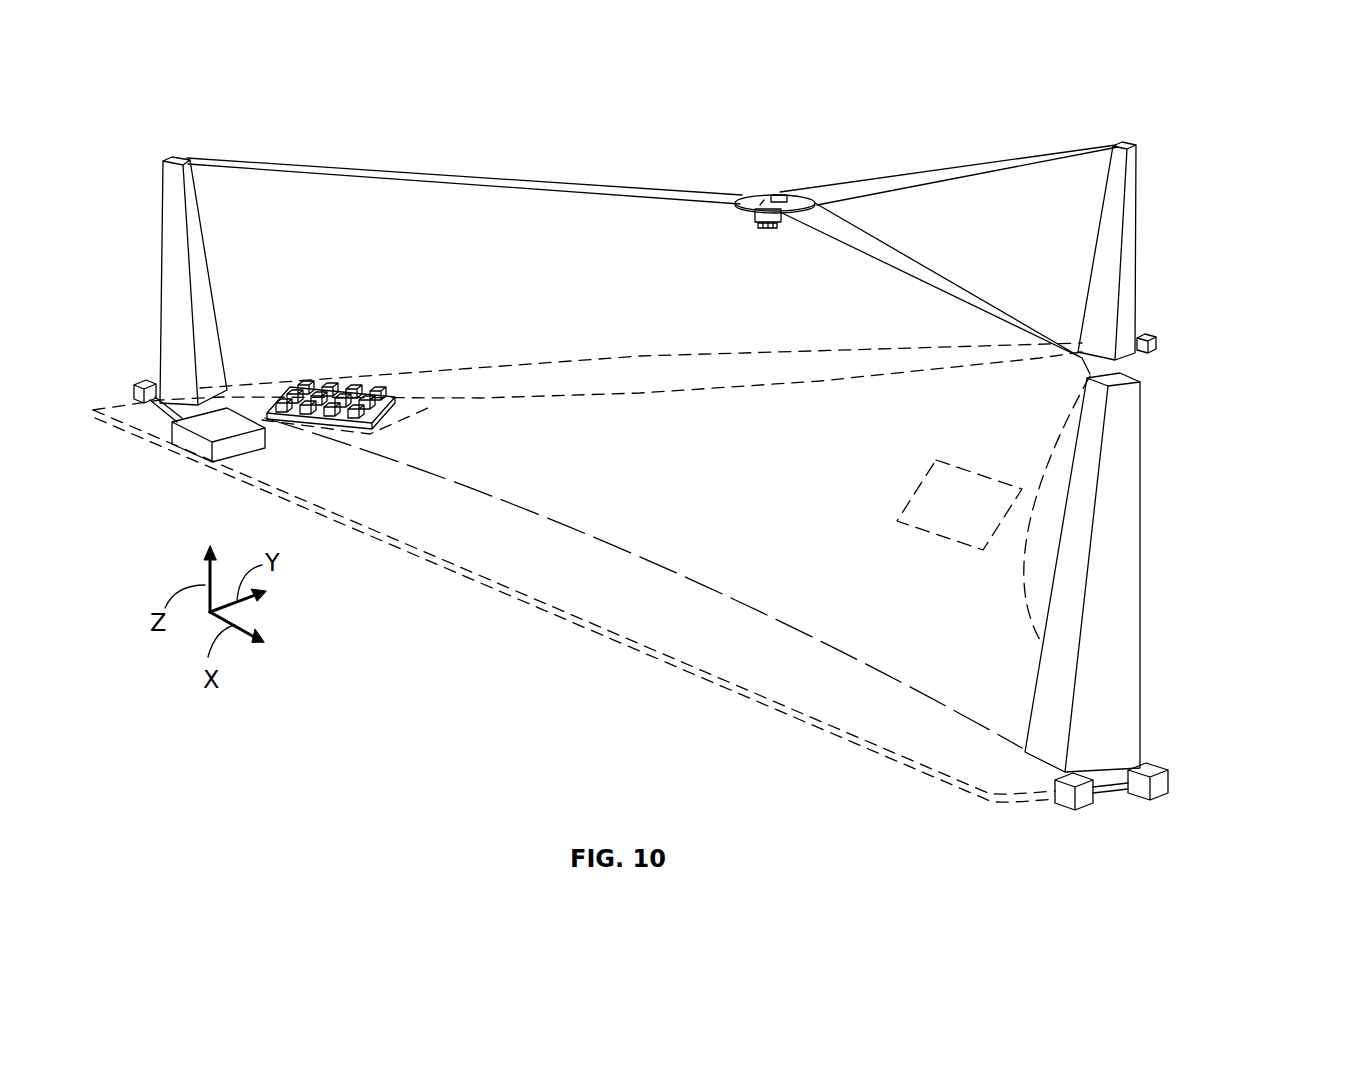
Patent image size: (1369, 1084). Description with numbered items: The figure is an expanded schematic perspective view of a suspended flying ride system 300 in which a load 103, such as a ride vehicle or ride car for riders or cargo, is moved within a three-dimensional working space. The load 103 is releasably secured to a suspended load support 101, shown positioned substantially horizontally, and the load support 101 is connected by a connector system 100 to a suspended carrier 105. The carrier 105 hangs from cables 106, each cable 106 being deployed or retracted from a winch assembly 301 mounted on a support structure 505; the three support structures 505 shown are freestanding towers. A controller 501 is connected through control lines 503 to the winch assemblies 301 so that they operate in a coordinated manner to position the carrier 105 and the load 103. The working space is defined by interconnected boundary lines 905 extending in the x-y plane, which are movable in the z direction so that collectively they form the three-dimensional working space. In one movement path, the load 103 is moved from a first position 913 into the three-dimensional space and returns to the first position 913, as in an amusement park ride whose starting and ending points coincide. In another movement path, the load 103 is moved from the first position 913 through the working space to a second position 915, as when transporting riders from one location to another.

The connector system 100 is at (804, 216).
The suspended load support 101 is at (363, 390).
The load 103 is at (760, 215).
The suspended carrier 105 is at (770, 200).
The cable 106 is at (568, 178).
The suspended flying ride system 300 is at (1228, 255).
The winch assembly 301 is at (142, 380).
The controller 501 is at (195, 452).
The control line 503 is at (672, 357).
The support structure 505 is at (213, 300).
The interconnected boundary line 905 is at (617, 545).
The first position 913 is at (432, 431).
The second position 915 is at (918, 486).